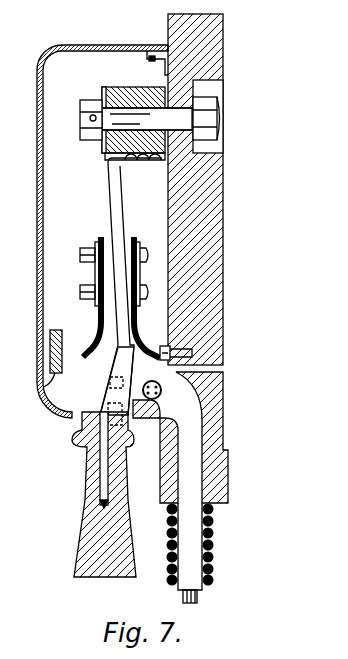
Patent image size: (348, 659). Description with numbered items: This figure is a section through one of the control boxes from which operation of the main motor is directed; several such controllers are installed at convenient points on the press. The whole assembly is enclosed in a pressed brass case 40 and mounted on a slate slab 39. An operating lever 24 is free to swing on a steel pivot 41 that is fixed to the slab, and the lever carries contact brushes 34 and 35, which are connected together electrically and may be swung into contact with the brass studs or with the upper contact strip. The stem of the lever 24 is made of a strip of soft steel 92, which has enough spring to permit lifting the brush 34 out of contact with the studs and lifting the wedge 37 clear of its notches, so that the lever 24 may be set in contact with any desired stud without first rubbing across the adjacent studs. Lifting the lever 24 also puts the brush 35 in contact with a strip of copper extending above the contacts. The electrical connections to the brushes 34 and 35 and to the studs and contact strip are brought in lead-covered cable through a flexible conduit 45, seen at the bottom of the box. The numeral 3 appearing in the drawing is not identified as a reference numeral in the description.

The slate slab 39 is at (168, 20).
The pressed brass case 40 is at (37, 76).
The steel pivot 41 is at (222, 118).
The strip of soft steel 92 is at (108, 186).
The wedge 37 is at (100, 408).
The operating lever 24 is at (74, 512).
The contact brush 35 is at (101, 310).
The contact brush 34 is at (136, 318).
The insert 3 is at (38, 390).
The flexible conduit 45 is at (212, 536).